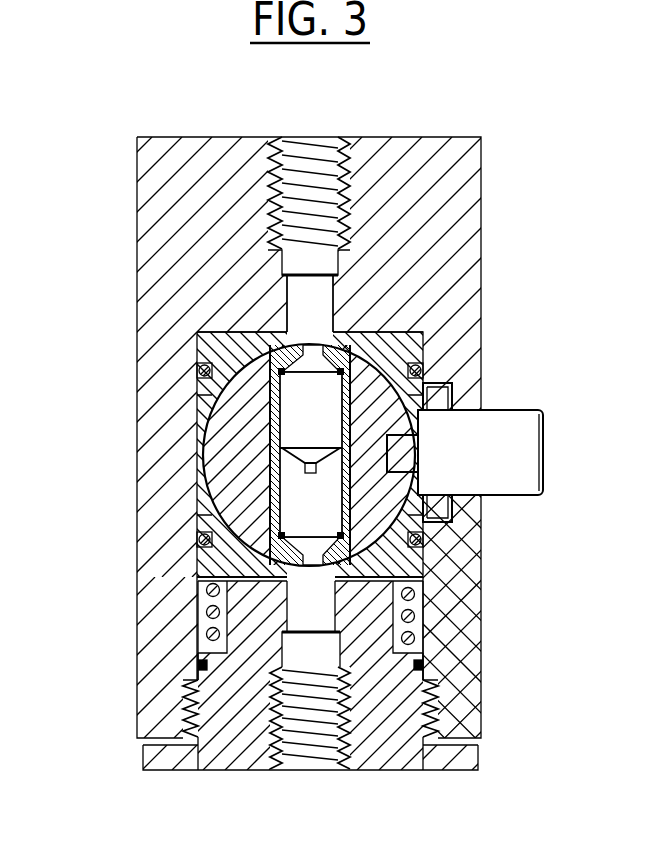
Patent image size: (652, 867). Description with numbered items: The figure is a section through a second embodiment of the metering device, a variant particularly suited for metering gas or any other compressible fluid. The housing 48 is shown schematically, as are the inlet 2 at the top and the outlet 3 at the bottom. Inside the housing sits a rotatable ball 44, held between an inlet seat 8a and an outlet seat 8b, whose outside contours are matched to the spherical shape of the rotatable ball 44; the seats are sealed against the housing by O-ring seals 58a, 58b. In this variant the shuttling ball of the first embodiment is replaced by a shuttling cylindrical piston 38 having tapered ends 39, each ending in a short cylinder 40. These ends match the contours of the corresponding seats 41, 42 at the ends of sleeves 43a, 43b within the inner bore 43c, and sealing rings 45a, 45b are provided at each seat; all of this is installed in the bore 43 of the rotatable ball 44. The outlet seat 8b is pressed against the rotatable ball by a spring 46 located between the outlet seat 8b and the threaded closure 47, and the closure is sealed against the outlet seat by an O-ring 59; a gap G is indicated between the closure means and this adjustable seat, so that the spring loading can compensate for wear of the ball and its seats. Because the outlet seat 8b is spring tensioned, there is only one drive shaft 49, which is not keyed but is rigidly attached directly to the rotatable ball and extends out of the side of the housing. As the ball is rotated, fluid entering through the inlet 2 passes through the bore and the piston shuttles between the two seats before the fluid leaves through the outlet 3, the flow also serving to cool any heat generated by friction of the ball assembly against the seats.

The inlet 2 is at (322, 185).
The outlet 3 is at (330, 745).
The inlet seat 8a is at (225, 357).
The outlet seat 8b is at (215, 626).
The shuttling cylindrical piston 38 is at (340, 447).
The tapered ends 39 is at (432, 511).
The short cylinder 40 is at (305, 466).
The seat 41 is at (223, 332).
The seat 42 is at (196, 662).
The bore 43 is at (320, 421).
The sleeve 43a is at (346, 418).
The sleeve 43b is at (368, 525).
The inner bore 43c is at (293, 420).
The rotatable ball 44 is at (420, 562).
The sealing ring 45a is at (283, 521).
The sealing ring 45b is at (425, 336).
The spring 46 is at (412, 603).
The threaded closure 47 is at (407, 730).
The housing 48 is at (438, 190).
The drive shaft 49 is at (518, 452).
The O-ring seal 58a is at (424, 368).
The O-ring seal 58b is at (200, 540).
The O-ring 59 is at (205, 670).
The gap G is at (353, 585).